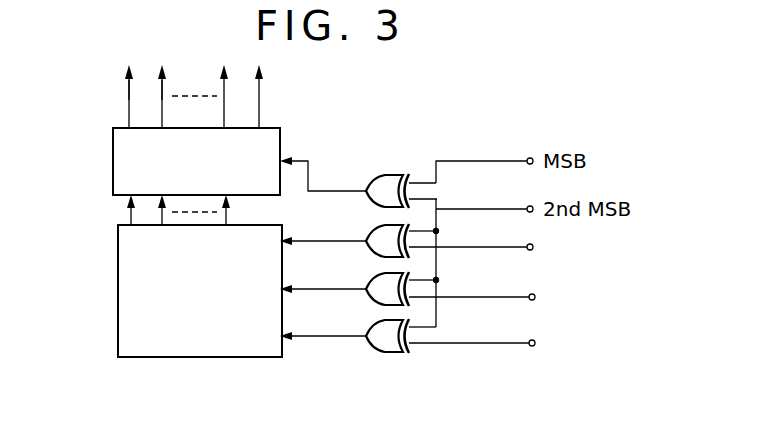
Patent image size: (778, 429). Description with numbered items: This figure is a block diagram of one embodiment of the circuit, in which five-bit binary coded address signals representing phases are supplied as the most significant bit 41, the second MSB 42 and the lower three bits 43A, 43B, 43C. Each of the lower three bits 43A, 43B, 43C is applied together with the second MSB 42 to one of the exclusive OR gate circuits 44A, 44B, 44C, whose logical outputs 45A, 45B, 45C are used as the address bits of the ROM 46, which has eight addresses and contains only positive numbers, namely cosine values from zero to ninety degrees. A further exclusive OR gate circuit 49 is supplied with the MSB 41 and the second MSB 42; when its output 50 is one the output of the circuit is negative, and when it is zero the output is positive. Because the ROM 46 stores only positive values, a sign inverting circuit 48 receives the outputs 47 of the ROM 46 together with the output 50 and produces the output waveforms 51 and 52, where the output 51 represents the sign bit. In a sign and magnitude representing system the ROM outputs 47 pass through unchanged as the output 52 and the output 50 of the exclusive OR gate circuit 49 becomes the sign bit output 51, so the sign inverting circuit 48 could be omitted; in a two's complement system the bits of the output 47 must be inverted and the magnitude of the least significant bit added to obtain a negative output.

The most significant bit 41 is at (470, 159).
The second MSB 42 is at (480, 202).
The lower bit address signal 43A is at (482, 246).
The lower bit address signal 43B is at (482, 297).
The lower bit address signal 43C is at (482, 343).
The exclusive OR gate circuit 44A is at (372, 255).
The exclusive OR gate circuit 44B is at (380, 302).
The exclusive OR gate circuit 44C is at (390, 350).
The logical output 45A is at (316, 241).
The logical output 45B is at (317, 290).
The logical output 45C is at (307, 343).
The ROM 46 is at (192, 352).
The ROM outputs 47 is at (142, 213).
The sign inverting circuit 48 is at (113, 160).
The exclusive OR gate circuit 49 is at (386, 176).
The output of exclusive OR gate circuit 50 is at (312, 182).
The sign bit output 51 is at (270, 100).
The output waveform 52 is at (175, 83).